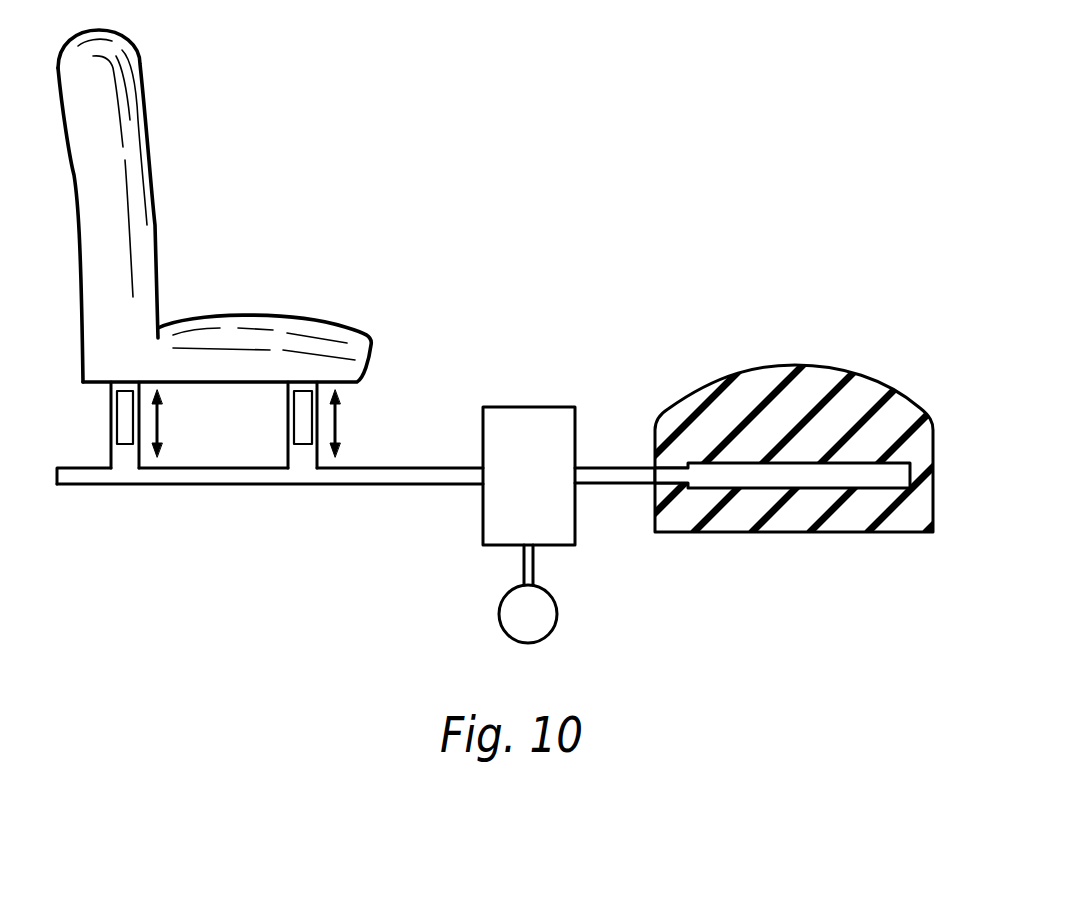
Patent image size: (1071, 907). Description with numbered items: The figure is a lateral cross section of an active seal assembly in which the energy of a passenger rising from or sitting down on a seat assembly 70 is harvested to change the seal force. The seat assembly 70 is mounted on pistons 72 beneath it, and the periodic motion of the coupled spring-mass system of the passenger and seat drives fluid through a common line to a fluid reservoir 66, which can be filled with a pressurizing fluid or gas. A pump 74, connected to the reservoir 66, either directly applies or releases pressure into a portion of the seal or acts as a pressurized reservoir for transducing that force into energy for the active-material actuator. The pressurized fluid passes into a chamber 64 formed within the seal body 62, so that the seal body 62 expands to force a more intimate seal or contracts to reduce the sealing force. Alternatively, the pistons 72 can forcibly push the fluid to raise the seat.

The seal body 62 is at (833, 367).
The chamber 64 is at (765, 480).
The fluid reservoir 66 is at (530, 407).
The seat assembly 70 is at (307, 320).
The pistons 72 is at (125, 418).
The pump 74 is at (505, 596).